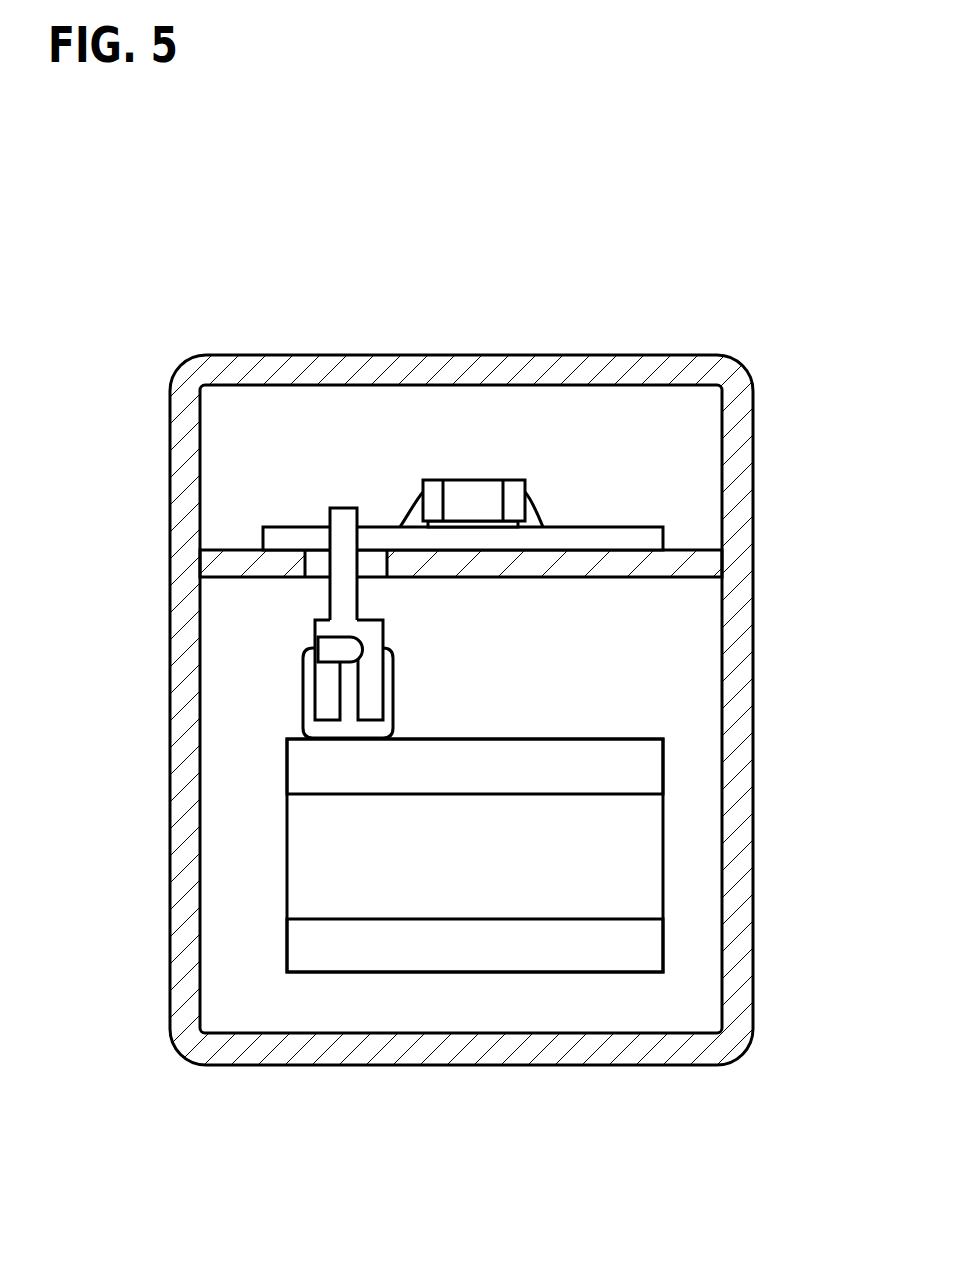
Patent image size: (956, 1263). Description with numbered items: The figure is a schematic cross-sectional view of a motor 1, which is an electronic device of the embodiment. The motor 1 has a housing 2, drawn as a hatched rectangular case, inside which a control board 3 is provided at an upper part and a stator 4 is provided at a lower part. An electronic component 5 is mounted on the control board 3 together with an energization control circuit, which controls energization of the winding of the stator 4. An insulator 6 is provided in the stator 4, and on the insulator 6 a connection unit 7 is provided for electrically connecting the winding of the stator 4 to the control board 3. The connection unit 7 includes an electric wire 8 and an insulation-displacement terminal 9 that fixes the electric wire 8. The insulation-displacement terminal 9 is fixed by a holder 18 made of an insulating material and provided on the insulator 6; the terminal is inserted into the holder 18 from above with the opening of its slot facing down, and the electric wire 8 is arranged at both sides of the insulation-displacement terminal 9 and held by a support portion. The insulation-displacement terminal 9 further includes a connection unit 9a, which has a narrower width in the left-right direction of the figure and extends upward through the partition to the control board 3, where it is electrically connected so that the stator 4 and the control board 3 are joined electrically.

The motor 1 is at (683, 335).
The housing 2 is at (752, 680).
The control board 3 is at (618, 528).
The stator 4 is at (663, 858).
The electronic component 5 is at (510, 480).
The insulator 6 is at (592, 753).
The connection unit 7 is at (369, 623).
The electric wire 8 is at (335, 647).
The insulation-displacement terminal 9 is at (377, 630).
The connection unit 9a is at (340, 596).
The holder 18 is at (393, 706).